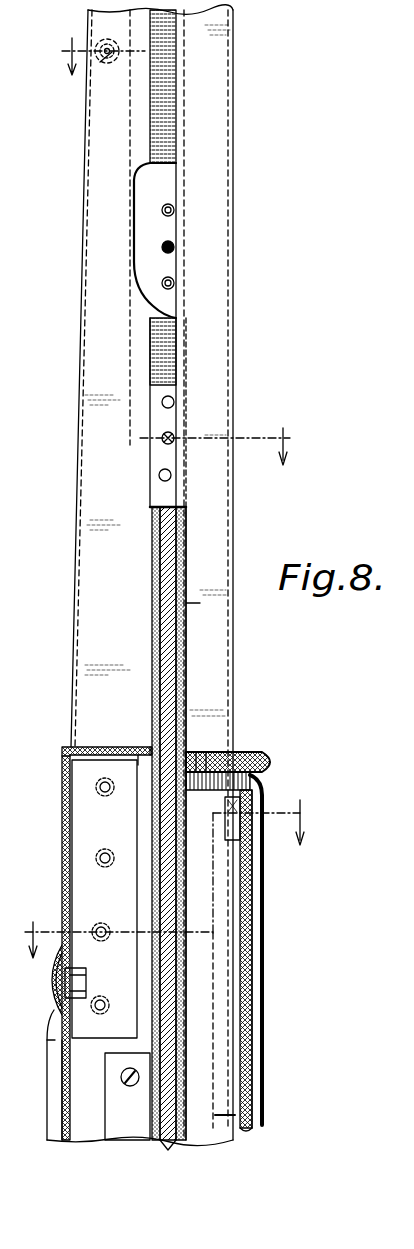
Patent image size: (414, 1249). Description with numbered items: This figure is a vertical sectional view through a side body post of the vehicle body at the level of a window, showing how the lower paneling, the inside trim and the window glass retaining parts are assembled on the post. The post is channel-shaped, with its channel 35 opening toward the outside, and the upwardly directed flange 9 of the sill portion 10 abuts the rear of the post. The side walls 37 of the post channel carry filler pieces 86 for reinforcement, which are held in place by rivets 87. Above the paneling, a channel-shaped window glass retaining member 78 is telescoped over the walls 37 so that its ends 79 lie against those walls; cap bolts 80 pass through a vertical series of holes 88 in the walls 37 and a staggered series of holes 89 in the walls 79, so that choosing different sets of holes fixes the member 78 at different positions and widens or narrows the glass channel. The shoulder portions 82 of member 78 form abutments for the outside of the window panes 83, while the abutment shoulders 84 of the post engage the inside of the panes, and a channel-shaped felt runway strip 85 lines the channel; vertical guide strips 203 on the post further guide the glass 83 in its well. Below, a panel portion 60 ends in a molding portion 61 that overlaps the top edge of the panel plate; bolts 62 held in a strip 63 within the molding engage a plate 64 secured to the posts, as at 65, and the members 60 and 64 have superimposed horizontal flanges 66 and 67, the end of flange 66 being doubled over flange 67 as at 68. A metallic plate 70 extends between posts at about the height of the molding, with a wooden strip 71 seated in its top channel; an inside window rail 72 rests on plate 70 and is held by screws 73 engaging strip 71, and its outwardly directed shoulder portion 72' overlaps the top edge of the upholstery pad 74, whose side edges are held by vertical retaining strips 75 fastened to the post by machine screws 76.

The upwardly directed flange 9 is at (175, 248).
The sill portion 10 is at (167, 876).
The channel 35 is at (75, 1104).
The side walls 37 is at (177, 304).
The panel portion 60 is at (62, 851).
The molding portion 61 is at (52, 970).
The bolts 62 is at (50, 1012).
The strip 63 is at (52, 1024).
The plate 64 is at (73, 888).
The securing points 65 is at (108, 866).
The horizontal flange 66 is at (75, 748).
The horizontal flange 67 is at (66, 760).
The doubled-over end 68 is at (142, 757).
The metallic plate 70 is at (254, 892).
The wooden strip 71 is at (240, 804).
The inside window rail 72 is at (247, 749).
The shoulder portion 72' is at (266, 770).
The screws 73 is at (210, 752).
The upholstery pad 74 is at (252, 870).
The vertical retaining strips 75 is at (264, 989).
The machine screws 76 is at (262, 831).
The window glass retaining member 78 is at (96, 380).
The ends 79 is at (170, 104).
The cap bolts 80 is at (164, 244).
The shoulder portions 82 is at (232, 327).
The window panes 83 is at (172, 560).
The abutment shoulders 84 is at (190, 609).
The felt runway strip 85 is at (184, 641).
The filler pieces 86 is at (118, 36).
The rivets 87 is at (104, 62).
The holes 88 is at (176, 282).
The holes 89 is at (175, 205).
The vertical guide strips 203 is at (140, 1104).